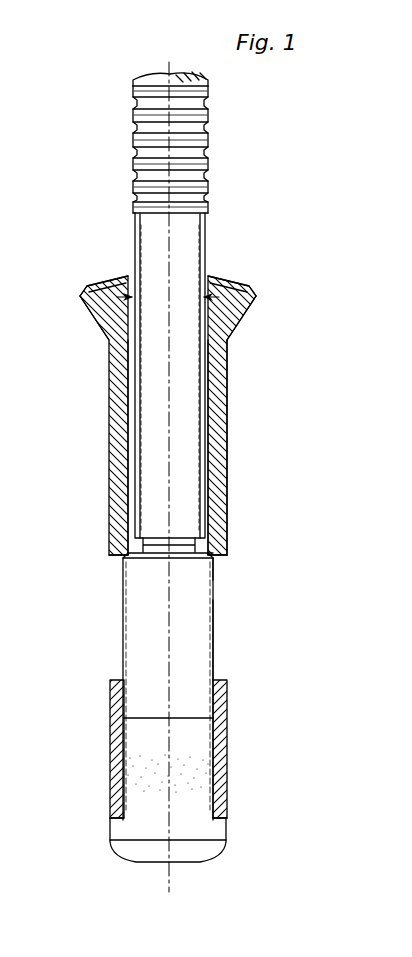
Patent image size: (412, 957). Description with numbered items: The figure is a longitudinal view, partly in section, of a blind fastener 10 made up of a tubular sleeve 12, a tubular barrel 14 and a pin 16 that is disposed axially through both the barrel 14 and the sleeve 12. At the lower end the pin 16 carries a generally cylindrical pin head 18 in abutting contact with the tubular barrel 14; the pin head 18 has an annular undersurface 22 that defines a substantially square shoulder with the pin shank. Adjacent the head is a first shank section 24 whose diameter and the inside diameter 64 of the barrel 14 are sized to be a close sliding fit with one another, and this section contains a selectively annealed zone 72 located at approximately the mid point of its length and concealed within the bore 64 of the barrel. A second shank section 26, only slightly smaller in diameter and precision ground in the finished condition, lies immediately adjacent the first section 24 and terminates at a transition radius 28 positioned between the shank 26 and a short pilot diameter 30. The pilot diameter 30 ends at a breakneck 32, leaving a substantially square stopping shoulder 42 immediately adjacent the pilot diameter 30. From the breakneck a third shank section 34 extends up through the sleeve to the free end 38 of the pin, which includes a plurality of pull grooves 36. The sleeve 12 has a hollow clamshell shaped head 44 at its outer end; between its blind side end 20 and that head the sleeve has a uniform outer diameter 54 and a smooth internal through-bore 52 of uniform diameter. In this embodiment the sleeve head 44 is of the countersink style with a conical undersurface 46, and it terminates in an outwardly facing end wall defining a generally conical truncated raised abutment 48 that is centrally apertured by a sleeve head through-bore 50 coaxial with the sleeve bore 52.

The blind fastener 10 is at (286, 321).
The tubular sleeve 12 is at (231, 489).
The tubular barrel 14 is at (229, 720).
The pin 16 is at (204, 651).
The pin head 18 is at (212, 850).
The blind side end 20 is at (218, 558).
The annular undersurface 22 is at (110, 826).
The first shank section 24 is at (227, 745).
The second shank section 26 is at (214, 668).
The transition radius 28 is at (215, 566).
The pilot diameter 30 is at (113, 560).
The breakneck 32 is at (209, 545).
The third shank section 34 is at (207, 231).
The pull grooves 36 is at (205, 160).
The free end 38 is at (108, 130).
The stopping shoulder 42 is at (180, 548).
The sleeve head 44 is at (233, 287).
The conical undersurface 46 is at (97, 311).
The raised abutment 48 is at (107, 280).
The sleeve head through-bore 50 is at (209, 277).
The internal through-bore 52 is at (129, 437).
The outer diameter 54 is at (228, 437).
The inside diameter 64 is at (211, 806).
The annealed zone 72 is at (138, 768).